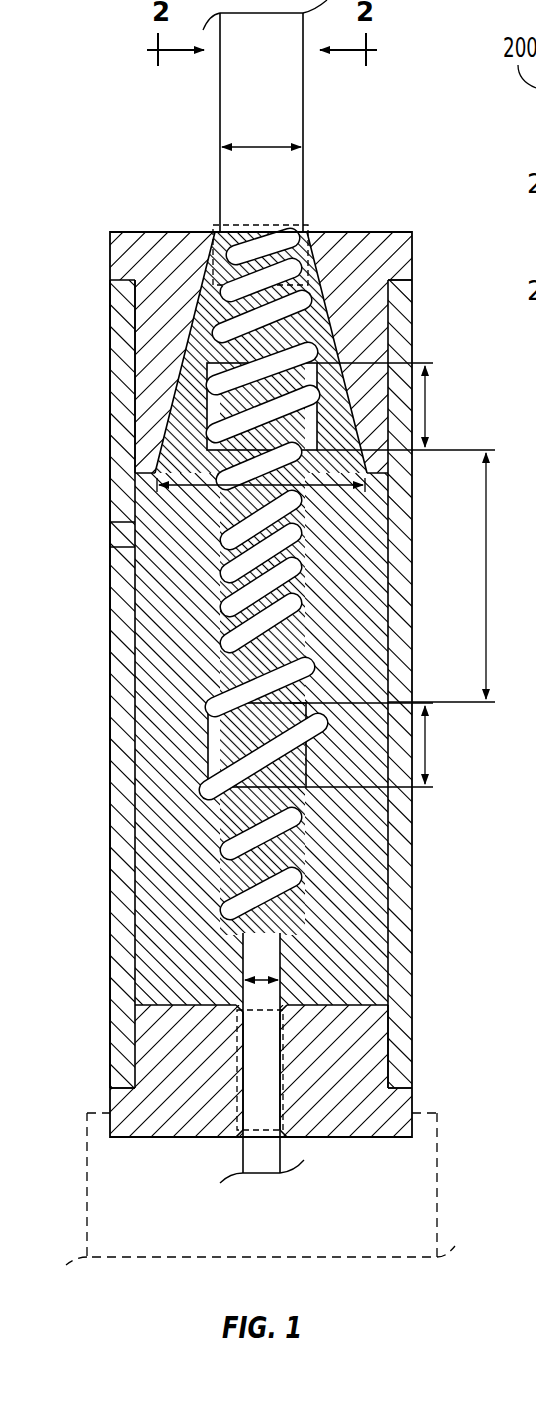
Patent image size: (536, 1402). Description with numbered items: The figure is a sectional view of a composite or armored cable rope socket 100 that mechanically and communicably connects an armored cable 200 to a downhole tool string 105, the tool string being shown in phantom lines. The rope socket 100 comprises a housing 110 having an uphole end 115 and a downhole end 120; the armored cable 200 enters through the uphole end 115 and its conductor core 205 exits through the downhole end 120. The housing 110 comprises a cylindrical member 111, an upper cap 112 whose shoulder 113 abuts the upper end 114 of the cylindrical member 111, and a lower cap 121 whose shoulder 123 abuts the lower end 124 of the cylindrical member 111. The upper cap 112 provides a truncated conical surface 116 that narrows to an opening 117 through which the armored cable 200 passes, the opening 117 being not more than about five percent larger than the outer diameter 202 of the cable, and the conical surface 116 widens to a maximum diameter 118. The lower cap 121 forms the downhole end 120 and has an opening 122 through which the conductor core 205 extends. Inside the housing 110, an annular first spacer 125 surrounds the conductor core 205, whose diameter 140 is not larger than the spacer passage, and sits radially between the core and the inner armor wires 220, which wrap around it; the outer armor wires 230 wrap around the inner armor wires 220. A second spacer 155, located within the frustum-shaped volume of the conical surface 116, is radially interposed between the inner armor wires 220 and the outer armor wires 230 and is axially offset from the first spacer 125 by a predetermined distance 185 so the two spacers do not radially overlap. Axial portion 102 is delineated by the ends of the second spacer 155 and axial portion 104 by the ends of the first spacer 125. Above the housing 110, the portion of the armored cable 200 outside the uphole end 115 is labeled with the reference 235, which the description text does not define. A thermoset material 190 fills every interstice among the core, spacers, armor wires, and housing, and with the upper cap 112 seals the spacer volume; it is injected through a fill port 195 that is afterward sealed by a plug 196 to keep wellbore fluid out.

The rope socket 100 is at (108, 190).
The axial portion 102 is at (397, 406).
The axial portion 104 is at (428, 750).
The downhole tool string 105 is at (406, 1230).
The housing 110 is at (97, 823).
The cylindrical member 111 is at (124, 907).
The upper cap 112 is at (158, 343).
The shoulder 113 is at (404, 268).
The upper end 114 is at (118, 278).
The uphole end 115 is at (428, 243).
The truncated conical surface 116 is at (185, 453).
The opening 117 is at (190, 231).
The maximum diameter 118 is at (366, 488).
The downhole end 120 is at (430, 1090).
The lower cap 121 is at (170, 1065).
The opening 122 is at (287, 1069).
The shoulder 123 is at (122, 1098).
The lower end 124 is at (407, 1093).
The first spacer 125 is at (238, 713).
The diameter of the conductor core 140 is at (280, 980).
The second spacer 155 is at (236, 428).
The predetermined distance 185 is at (488, 582).
The thermoset material 190 is at (193, 583).
The fill port 195 is at (119, 552).
The plug 196 is at (118, 533).
The armored cable 200 is at (256, 591).
The outer diameter of the armored cable 202 is at (220, 147).
The conductor core 205 is at (256, 1040).
The inner armor wires 220 is at (232, 741).
The outer armor wires 230 is at (305, 687).
The upper shaft portion 235 is at (292, 98).